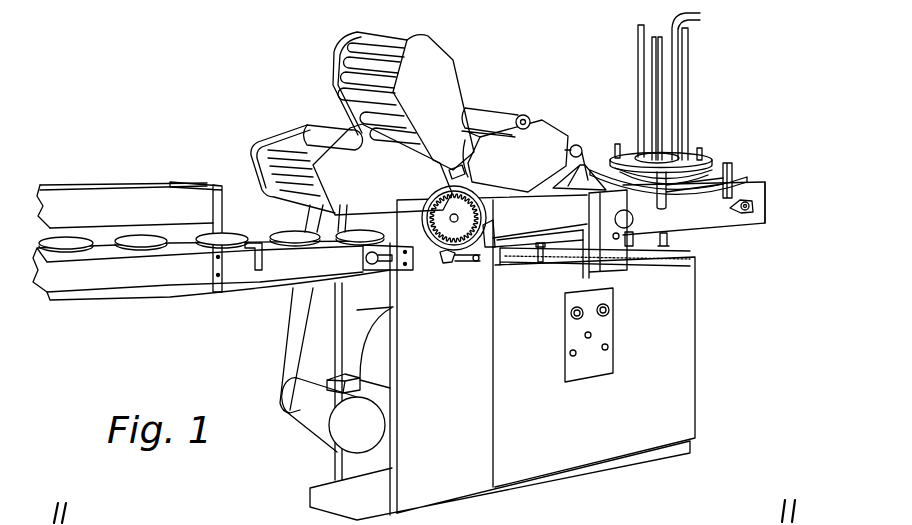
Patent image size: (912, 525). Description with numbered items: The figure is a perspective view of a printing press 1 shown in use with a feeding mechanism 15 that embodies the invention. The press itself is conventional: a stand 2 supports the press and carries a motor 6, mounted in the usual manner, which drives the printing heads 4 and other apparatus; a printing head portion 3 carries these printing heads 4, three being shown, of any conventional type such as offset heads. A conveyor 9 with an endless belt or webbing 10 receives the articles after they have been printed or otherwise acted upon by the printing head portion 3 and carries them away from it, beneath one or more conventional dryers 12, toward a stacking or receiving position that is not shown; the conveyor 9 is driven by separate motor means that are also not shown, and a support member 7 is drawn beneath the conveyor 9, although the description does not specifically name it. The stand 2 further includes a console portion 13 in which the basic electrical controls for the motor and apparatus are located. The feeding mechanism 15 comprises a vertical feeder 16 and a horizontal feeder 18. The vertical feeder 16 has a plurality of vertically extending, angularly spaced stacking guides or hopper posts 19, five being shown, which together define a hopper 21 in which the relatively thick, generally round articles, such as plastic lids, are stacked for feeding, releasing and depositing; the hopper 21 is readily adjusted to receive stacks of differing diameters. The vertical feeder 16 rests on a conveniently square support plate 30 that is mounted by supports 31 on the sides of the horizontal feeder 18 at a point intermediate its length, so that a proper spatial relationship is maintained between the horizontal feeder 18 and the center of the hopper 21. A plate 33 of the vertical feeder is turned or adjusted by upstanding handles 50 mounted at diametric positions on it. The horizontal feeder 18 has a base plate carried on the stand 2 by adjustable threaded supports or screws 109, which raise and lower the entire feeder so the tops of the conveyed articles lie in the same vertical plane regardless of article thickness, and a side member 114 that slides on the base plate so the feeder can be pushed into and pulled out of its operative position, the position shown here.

The printing press 1 is at (713, 338).
The stand 2 is at (542, 355).
The printing head portion 3 is at (453, 117).
The printing heads 4 is at (409, 123).
The motor 6 is at (300, 414).
The support leg 7 is at (290, 337).
The conveyor 9 is at (147, 275).
The endless belt or webbing 10 is at (200, 298).
The dryers 12 is at (115, 210).
The console portion 13 is at (606, 333).
The feeding mechanism 15 is at (674, 142).
The vertical feeder 16 is at (681, 82).
The horizontal feeder 18 is at (766, 197).
The hopper posts 19 is at (696, 22).
The hopper 21 is at (667, 135).
The support plate 30 is at (710, 160).
The supports 31 is at (733, 167).
The plate 33 is at (699, 150).
The upstanding handles 50 is at (617, 146).
The adjustable threaded supports or screws 109 is at (665, 243).
The side member 114 is at (707, 220).